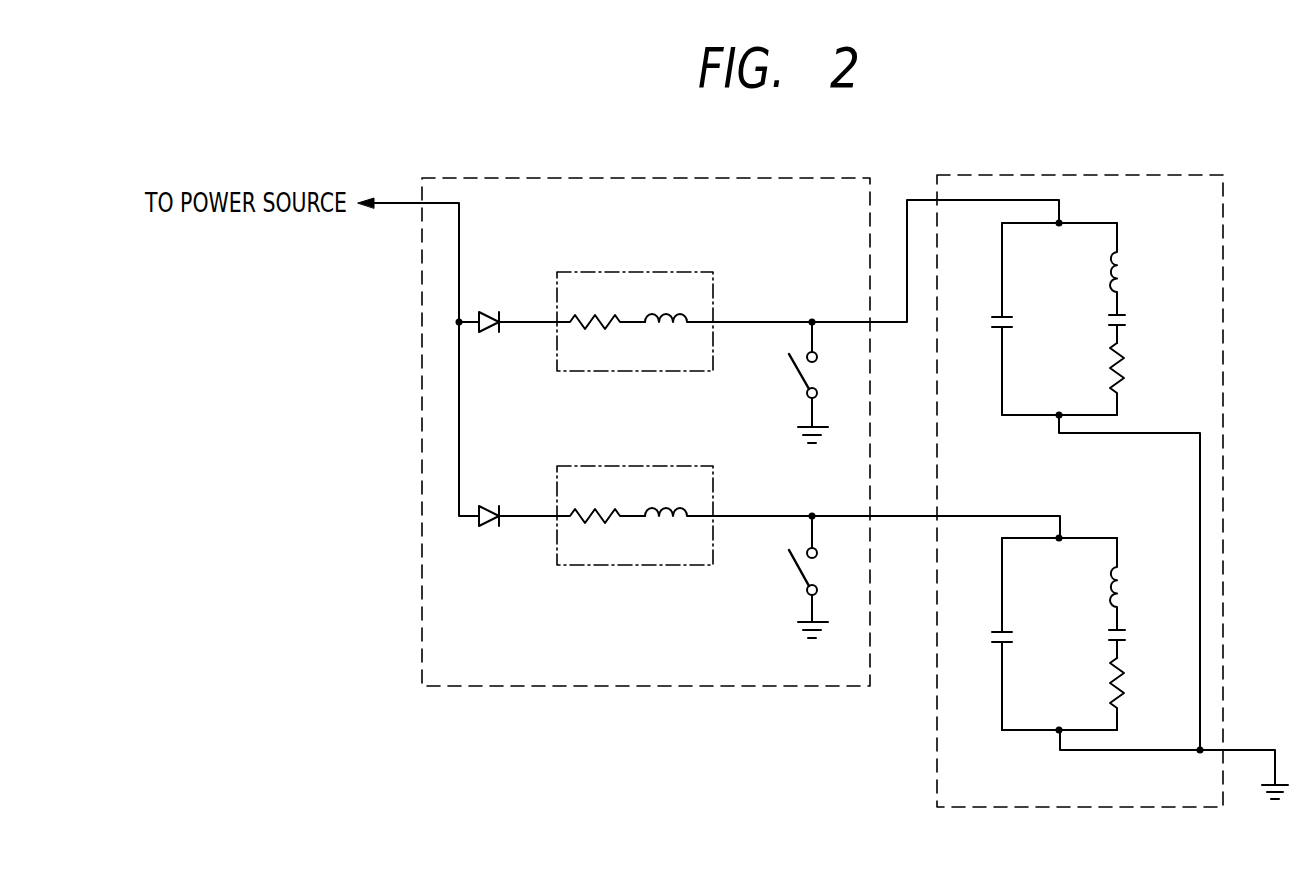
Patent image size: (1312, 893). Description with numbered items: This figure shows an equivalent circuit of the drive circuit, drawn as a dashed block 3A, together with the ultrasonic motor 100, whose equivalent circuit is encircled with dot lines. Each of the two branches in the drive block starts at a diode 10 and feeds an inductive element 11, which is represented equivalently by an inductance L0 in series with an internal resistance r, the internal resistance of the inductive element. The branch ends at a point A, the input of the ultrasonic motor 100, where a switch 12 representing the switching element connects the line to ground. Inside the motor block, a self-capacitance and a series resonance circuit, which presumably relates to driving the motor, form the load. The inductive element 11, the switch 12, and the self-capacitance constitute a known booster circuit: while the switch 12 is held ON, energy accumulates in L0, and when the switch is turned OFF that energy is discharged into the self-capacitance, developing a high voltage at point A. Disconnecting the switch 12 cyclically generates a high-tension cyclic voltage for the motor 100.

The power supply unit 3A is at (840, 176).
The diode 10 is at (486, 310).
The inductive element 11 is at (684, 389).
The switch 12 is at (790, 371).
The ultrasonic motor 100 is at (1200, 174).
The point A is at (813, 316).
The internal resistance r is at (601, 400).
The inductance L0 is at (679, 466).